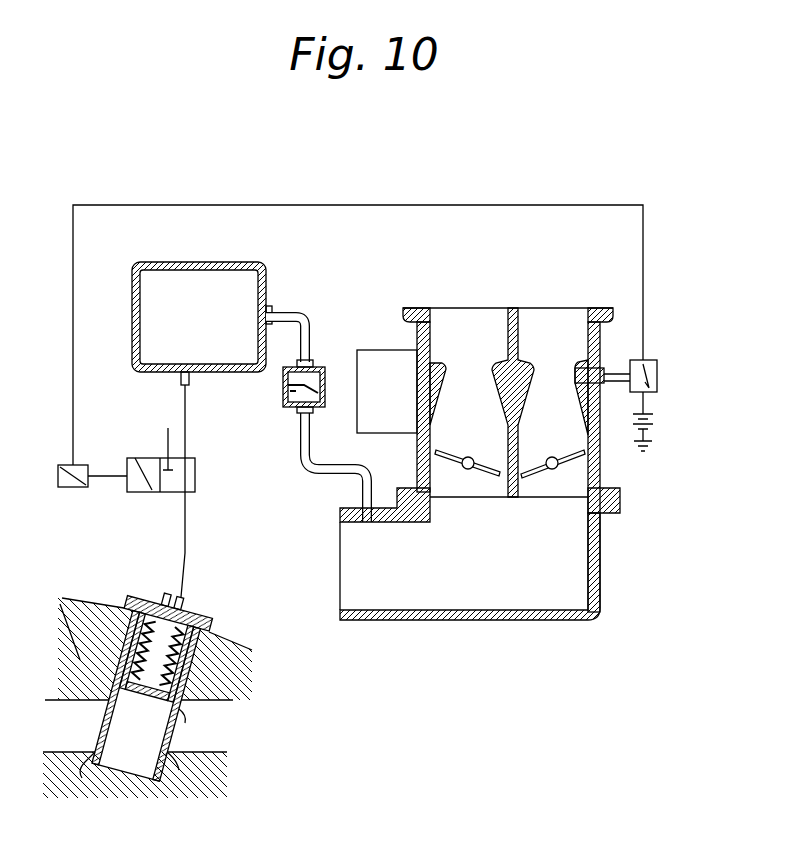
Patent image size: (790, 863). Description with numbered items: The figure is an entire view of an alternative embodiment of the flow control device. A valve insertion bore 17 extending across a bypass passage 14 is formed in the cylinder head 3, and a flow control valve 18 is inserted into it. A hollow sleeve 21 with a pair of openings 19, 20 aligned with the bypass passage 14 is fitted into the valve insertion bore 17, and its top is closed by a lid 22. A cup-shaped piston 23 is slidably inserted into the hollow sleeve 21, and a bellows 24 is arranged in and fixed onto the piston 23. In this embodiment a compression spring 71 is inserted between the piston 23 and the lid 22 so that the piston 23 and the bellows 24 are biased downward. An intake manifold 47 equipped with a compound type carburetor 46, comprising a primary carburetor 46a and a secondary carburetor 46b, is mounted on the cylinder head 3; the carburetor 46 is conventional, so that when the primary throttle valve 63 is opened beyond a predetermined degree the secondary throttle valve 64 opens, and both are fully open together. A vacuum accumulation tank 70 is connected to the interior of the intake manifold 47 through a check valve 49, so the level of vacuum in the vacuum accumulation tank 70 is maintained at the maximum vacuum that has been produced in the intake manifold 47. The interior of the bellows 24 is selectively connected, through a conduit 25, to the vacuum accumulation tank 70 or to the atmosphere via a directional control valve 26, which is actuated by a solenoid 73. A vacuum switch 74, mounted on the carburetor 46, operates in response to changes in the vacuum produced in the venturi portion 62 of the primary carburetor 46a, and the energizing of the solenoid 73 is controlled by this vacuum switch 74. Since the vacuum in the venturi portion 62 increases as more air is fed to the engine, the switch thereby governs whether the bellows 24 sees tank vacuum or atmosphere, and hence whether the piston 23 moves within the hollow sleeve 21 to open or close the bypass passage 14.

The cylinder head 3 is at (76, 614).
The bypass passage 14 is at (220, 752).
The valve insertion bore 17 is at (84, 698).
The flow control valve 18 is at (125, 574).
The opening 19 is at (82, 758).
The opening 20 is at (160, 772).
The hollow sleeve 21 is at (103, 613).
The lid 22 is at (142, 613).
The piston 23 is at (154, 702).
The bellows 24 is at (222, 648).
The conduit 25 is at (186, 558).
The directional control valve 26 is at (198, 471).
The carburetor 46 is at (400, 305).
The primary carburetor 46a is at (560, 305).
The secondary carburetor 46b is at (468, 305).
The intake manifold 47 is at (470, 622).
The check valve 49 is at (330, 362).
The venturi portion 62 is at (546, 369).
The primary throttle valve 63 is at (564, 463).
The secondary throttle valve 64 is at (484, 465).
The vacuum accumulation tank 70 is at (222, 262).
The compression spring 71 is at (118, 612).
The solenoid 73 is at (56, 465).
The vacuum switch 74 is at (651, 360).